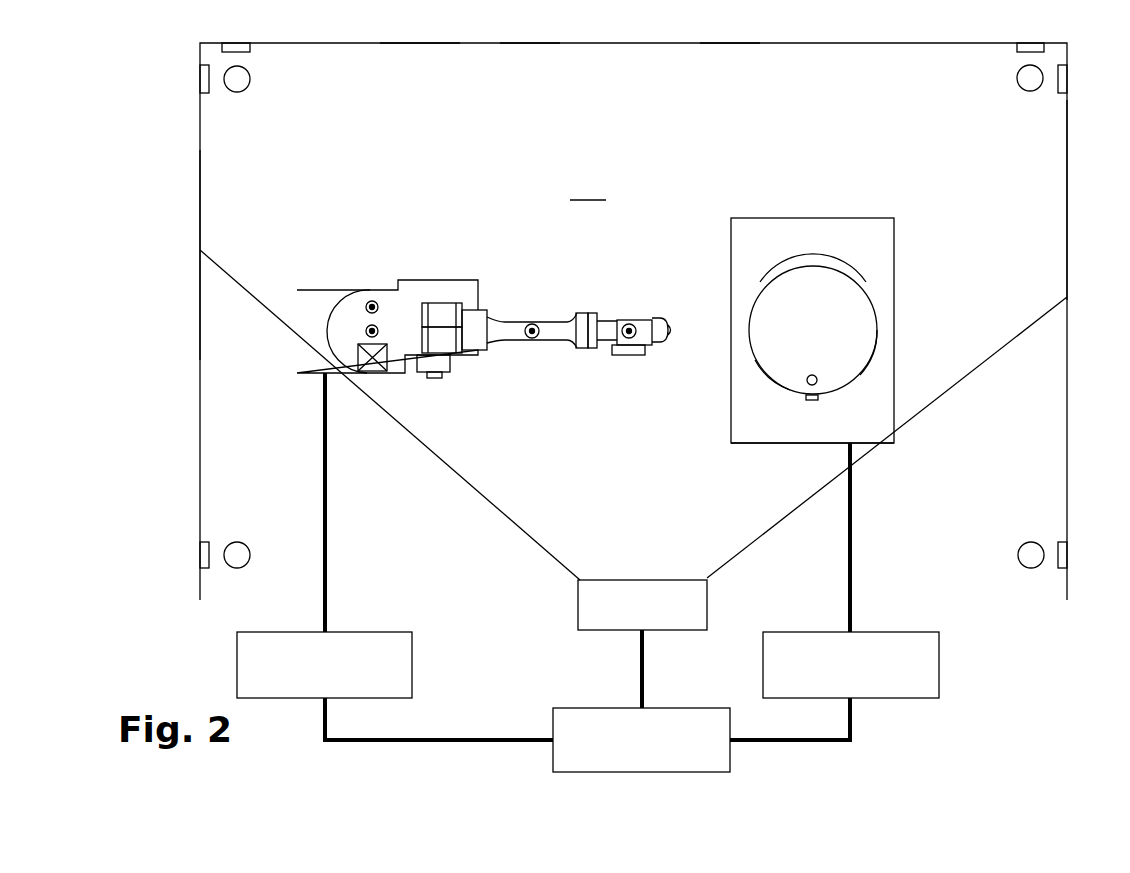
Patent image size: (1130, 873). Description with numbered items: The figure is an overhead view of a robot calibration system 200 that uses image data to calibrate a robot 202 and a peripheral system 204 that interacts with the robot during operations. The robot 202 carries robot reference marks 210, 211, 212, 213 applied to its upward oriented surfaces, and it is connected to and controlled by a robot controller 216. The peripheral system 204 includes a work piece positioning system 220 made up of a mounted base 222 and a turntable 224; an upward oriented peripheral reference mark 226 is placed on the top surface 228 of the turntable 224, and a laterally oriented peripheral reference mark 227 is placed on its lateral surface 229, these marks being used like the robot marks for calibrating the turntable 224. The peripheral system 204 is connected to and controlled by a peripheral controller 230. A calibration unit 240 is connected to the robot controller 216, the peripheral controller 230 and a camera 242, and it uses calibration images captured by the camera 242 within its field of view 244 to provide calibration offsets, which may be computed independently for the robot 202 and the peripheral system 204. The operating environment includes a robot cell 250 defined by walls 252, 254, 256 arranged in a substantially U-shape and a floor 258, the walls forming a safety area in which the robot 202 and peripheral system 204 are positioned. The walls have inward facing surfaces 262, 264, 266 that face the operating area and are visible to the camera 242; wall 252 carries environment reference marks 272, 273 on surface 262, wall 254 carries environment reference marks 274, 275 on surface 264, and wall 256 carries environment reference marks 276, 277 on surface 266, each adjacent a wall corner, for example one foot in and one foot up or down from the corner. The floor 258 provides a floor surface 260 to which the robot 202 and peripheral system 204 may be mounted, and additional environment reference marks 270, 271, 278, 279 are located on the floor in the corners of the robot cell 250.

The robot calibration system 200 is at (338, 752).
The robot 202 is at (315, 290).
The peripheral system 204 is at (893, 218).
The robot reference mark 210 is at (377, 336).
The robot reference mark 211 is at (376, 301).
The robot reference mark 212 is at (535, 324).
The robot reference mark 213 is at (632, 324).
The robot controller 216 is at (408, 632).
The work piece positioning system 220 is at (855, 305).
The mounted base 222 is at (768, 443).
The turntable 224 is at (877, 330).
The upward oriented peripheral reference mark 226 is at (812, 375).
The laterally oriented peripheral reference mark 227 is at (818, 400).
The top surface 228 is at (807, 288).
The lateral surface 229 is at (765, 375).
The peripheral controller 230 is at (772, 632).
The calibration unit 240 is at (730, 752).
The camera 242 is at (660, 630).
The field of view 244 is at (935, 400).
The robot cell 250 is at (1010, 612).
The wall 252 is at (200, 308).
The wall 254 is at (420, 43).
The wall 256 is at (1067, 222).
The floor 258 is at (591, 189).
The floor surface 260 is at (752, 40).
The inward facing surface 262 is at (200, 212).
The inward facing surface 264 is at (540, 43).
The inward facing surface 266 is at (1067, 160).
The environment reference mark 270 is at (250, 550).
The environment reference mark 271 is at (248, 87).
The environment reference mark 272 is at (209, 545).
The environment reference mark 273 is at (209, 85).
The environment reference mark 274 is at (247, 52).
The environment reference mark 275 is at (1018, 52).
The environment reference mark 276 is at (1058, 93).
The environment reference mark 277 is at (1058, 548).
The environment reference mark 278 is at (1018, 78).
The environment reference mark 279 is at (1018, 548).